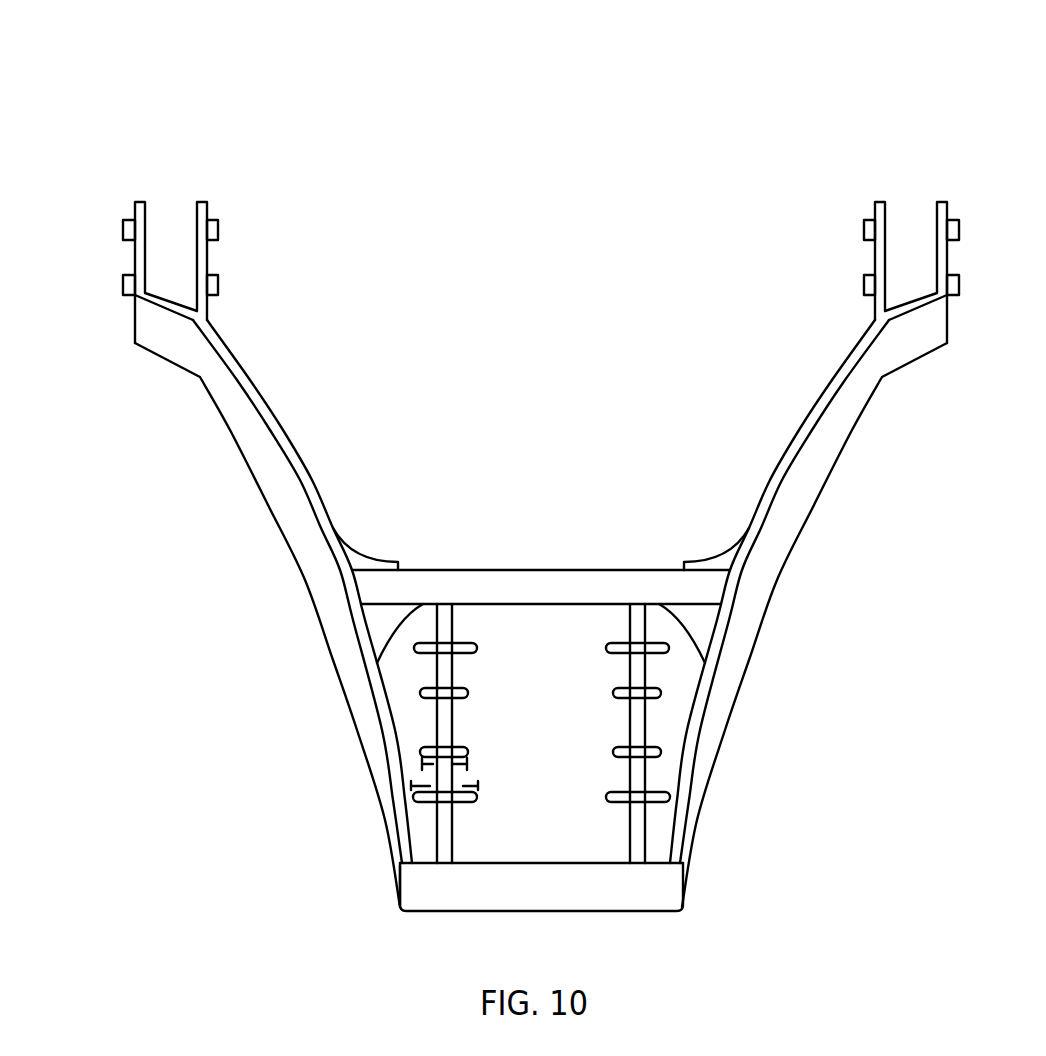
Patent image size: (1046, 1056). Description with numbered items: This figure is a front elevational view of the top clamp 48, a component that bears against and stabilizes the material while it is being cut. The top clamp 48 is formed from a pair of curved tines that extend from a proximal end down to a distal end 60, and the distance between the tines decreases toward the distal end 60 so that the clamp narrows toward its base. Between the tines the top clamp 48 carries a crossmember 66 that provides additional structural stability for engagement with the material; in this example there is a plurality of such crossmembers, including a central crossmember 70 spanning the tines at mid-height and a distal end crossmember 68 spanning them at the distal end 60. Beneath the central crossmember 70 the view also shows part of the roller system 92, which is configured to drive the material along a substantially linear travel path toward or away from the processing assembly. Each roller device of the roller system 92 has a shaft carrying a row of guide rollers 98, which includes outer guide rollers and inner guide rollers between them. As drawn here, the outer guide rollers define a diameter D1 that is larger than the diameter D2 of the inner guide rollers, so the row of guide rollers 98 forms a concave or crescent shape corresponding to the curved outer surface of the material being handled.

The top clamp 48 is at (193, 118).
The central crossmember 70 is at (662, 588).
The roller system 92 is at (477, 608).
The row of guide rollers 98 is at (605, 645).
The distal end 60 is at (412, 888).
The crossmember 66 is at (557, 897).
The distal end crossmember 68 is at (623, 883).
The diameter of outer guide rollers D1 is at (445, 786).
The diameter of inner guide rollers D2 is at (443, 764).